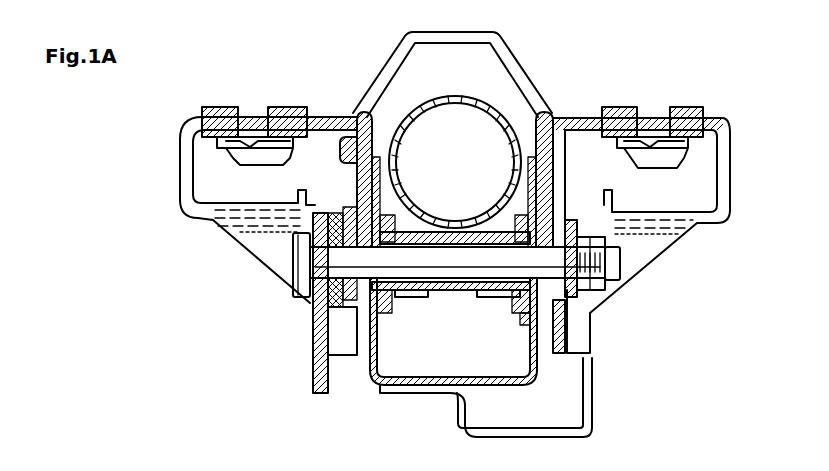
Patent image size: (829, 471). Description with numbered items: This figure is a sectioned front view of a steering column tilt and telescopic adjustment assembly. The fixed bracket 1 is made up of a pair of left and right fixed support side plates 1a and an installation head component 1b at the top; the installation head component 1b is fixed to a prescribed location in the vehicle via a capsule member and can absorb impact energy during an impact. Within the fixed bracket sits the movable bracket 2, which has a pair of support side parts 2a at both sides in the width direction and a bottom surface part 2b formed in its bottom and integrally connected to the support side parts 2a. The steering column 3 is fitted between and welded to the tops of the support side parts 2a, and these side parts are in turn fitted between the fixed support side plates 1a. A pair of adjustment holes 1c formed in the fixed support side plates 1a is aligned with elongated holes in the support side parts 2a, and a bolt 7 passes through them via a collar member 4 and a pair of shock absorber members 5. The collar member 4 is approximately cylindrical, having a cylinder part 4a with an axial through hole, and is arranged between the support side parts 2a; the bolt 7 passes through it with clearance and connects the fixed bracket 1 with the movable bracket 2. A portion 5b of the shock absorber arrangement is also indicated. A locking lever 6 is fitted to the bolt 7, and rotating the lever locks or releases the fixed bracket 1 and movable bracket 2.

The fixed bracket 1 is at (538, 85).
The fixed support side plates 1a is at (356, 182).
The installation head component 1b is at (488, 33).
The adjustment holes 1c is at (408, 220).
The movable bracket 2 is at (368, 378).
The support side parts 2a is at (372, 355).
The bottom surface part 2b is at (487, 393).
The steering column 3 is at (459, 96).
The collar member 4 is at (415, 297).
The cylinder part 4a is at (487, 300).
The shock absorber members 5 is at (386, 313).
The spacer lower portion 5b is at (524, 326).
The locking lever 6 is at (313, 377).
The bolt 7 is at (453, 260).